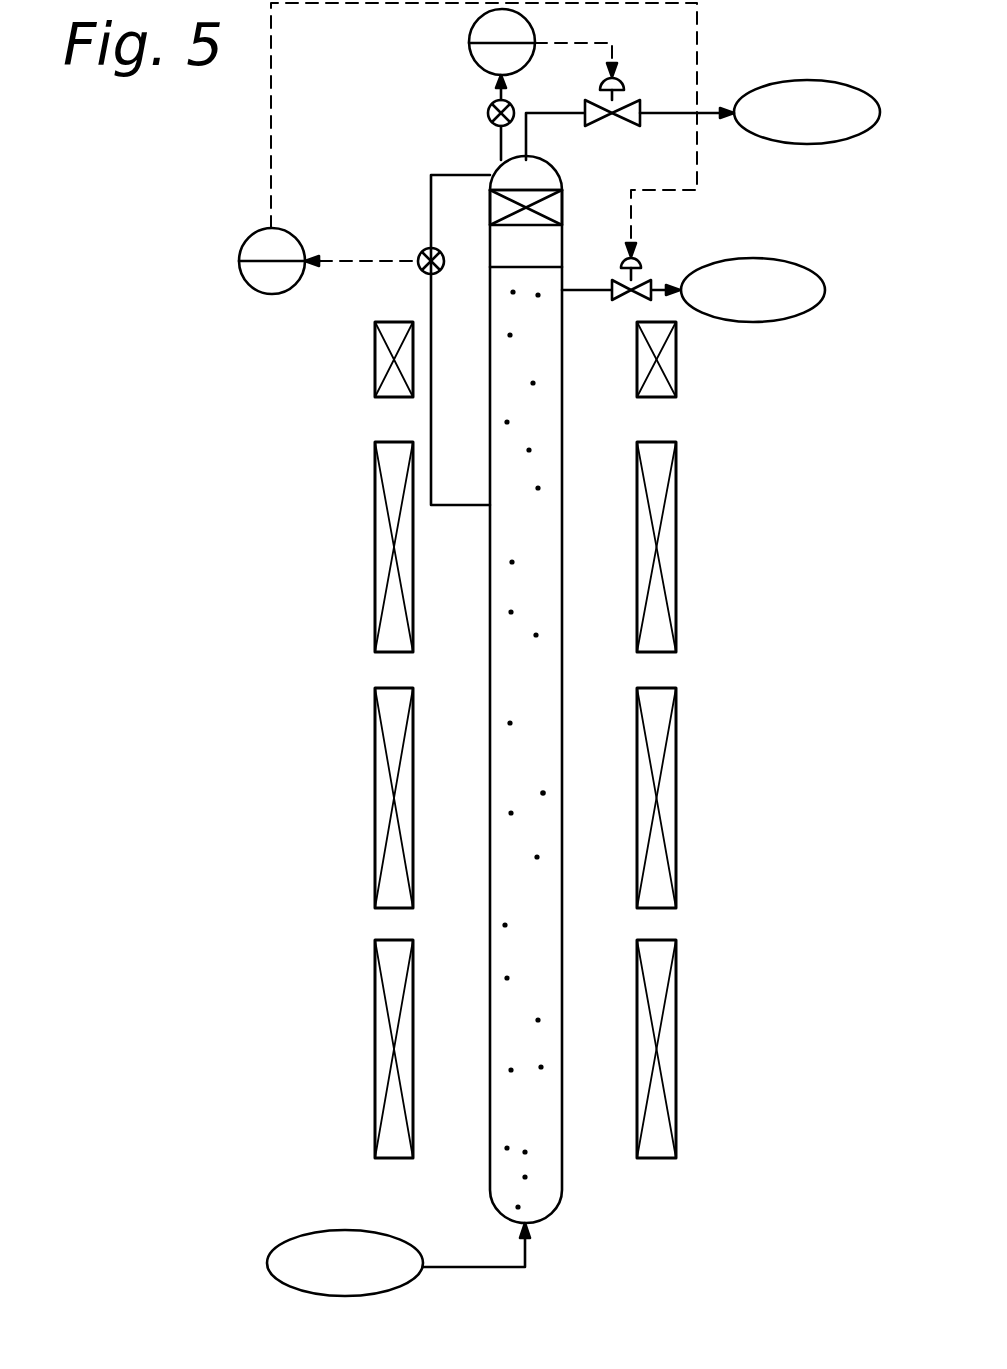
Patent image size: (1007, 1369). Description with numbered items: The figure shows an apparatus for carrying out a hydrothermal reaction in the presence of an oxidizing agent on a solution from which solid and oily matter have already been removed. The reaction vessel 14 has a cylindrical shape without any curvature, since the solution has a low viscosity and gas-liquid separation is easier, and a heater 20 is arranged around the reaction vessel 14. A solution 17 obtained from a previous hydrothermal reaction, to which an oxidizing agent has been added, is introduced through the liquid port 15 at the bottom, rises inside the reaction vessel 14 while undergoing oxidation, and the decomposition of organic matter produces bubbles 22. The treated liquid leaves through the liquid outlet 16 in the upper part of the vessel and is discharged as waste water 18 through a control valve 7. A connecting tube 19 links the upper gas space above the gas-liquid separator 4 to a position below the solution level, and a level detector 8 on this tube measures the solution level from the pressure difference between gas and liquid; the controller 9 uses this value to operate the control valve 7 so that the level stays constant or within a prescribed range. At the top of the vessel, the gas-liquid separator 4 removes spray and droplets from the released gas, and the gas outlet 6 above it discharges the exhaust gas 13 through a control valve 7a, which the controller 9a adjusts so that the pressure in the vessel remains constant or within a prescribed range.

The gas-liquid separator 4 is at (550, 210).
The gas outlet 6 is at (530, 160).
The control valve 7 is at (640, 262).
The control valve 7a is at (618, 80).
The level detector 8 is at (418, 270).
The controller 9 is at (253, 240).
The controller 9a is at (536, 38).
The exhaust gas 13 is at (820, 145).
The reaction vessel 14 is at (563, 1185).
The liquid port 15 is at (531, 1226).
The liquid outlet 16 is at (565, 300).
The solution 17 is at (351, 1230).
The waste water 18 is at (512, 105).
The connecting tube 19 is at (430, 416).
The heater 20 is at (677, 862).
The bubbles 22 is at (546, 793).